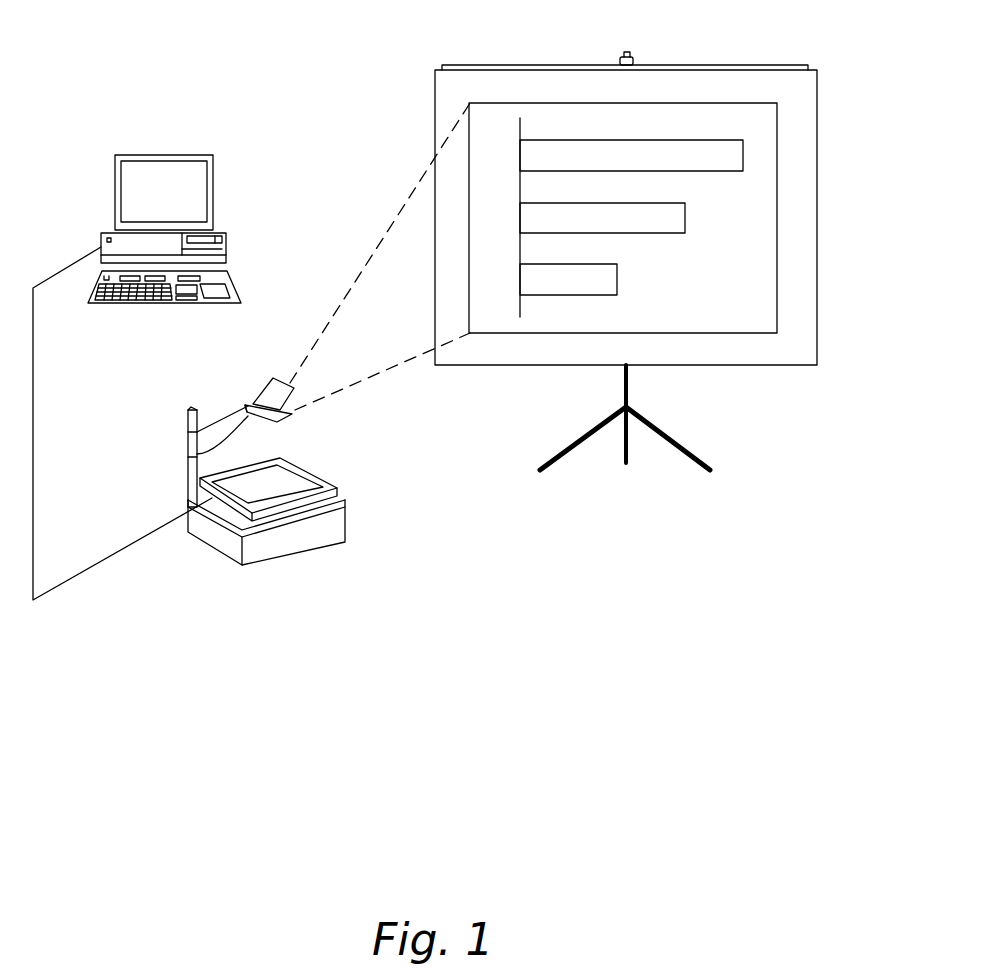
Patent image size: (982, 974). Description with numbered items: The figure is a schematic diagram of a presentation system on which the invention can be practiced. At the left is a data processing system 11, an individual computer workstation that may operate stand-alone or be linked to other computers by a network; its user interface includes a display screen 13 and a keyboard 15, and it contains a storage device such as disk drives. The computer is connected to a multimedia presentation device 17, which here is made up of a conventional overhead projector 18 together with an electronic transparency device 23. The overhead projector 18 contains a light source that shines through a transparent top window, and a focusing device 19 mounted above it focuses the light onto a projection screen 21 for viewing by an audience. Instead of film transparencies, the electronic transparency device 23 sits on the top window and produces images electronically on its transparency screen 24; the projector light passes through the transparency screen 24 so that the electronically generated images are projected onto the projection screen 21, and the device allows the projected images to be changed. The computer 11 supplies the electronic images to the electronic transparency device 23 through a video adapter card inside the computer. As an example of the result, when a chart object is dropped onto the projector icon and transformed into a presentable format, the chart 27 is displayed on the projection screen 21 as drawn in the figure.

The data processing system 11 is at (201, 201).
The display screen 13 is at (163, 188).
The keyboard 15 is at (229, 281).
The multimedia presentation device 17 is at (296, 484).
The overhead projector 18 is at (296, 540).
The focusing device 19 is at (282, 372).
The projection screen 21 is at (670, 250).
The electronic transparency device 23 is at (329, 472).
The transparency screen 24 is at (290, 478).
The chart 27 is at (778, 208).